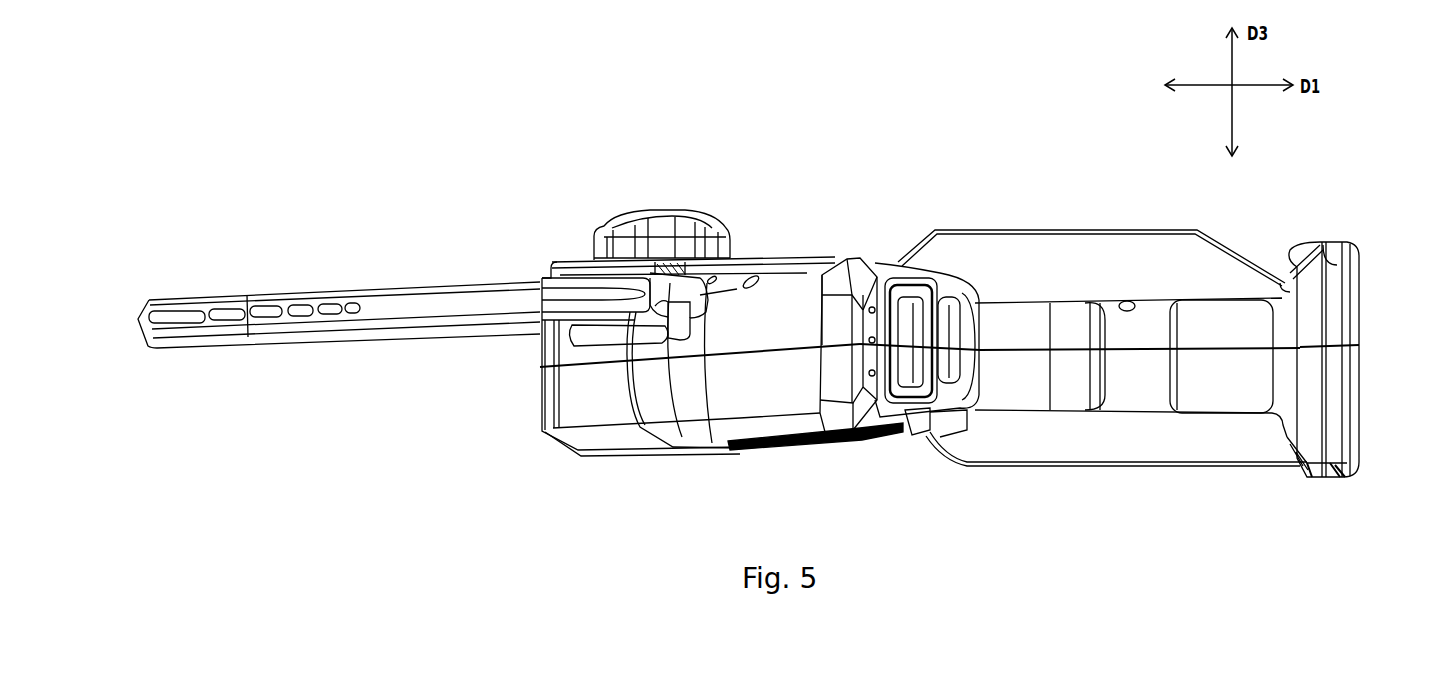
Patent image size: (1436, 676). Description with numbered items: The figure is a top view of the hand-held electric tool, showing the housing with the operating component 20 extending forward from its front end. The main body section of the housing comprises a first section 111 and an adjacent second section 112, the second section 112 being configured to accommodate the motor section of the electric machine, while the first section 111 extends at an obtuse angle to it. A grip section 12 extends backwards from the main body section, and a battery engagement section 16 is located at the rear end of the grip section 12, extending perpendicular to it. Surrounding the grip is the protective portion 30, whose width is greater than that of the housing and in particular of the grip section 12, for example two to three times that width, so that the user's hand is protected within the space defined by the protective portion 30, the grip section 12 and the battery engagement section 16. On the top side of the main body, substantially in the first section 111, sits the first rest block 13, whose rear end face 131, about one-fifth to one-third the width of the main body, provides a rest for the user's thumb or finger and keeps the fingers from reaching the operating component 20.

The grip section 12 is at (1143, 382).
The first rest block 13 is at (655, 330).
The battery engagement section 16 is at (1350, 308).
The operating component 20 is at (365, 305).
The protective portion 30 is at (1047, 257).
The first section of main body section 111 is at (585, 395).
The second section of main body section 112 is at (770, 382).
The rear end face of first rest block 131 is at (690, 318).